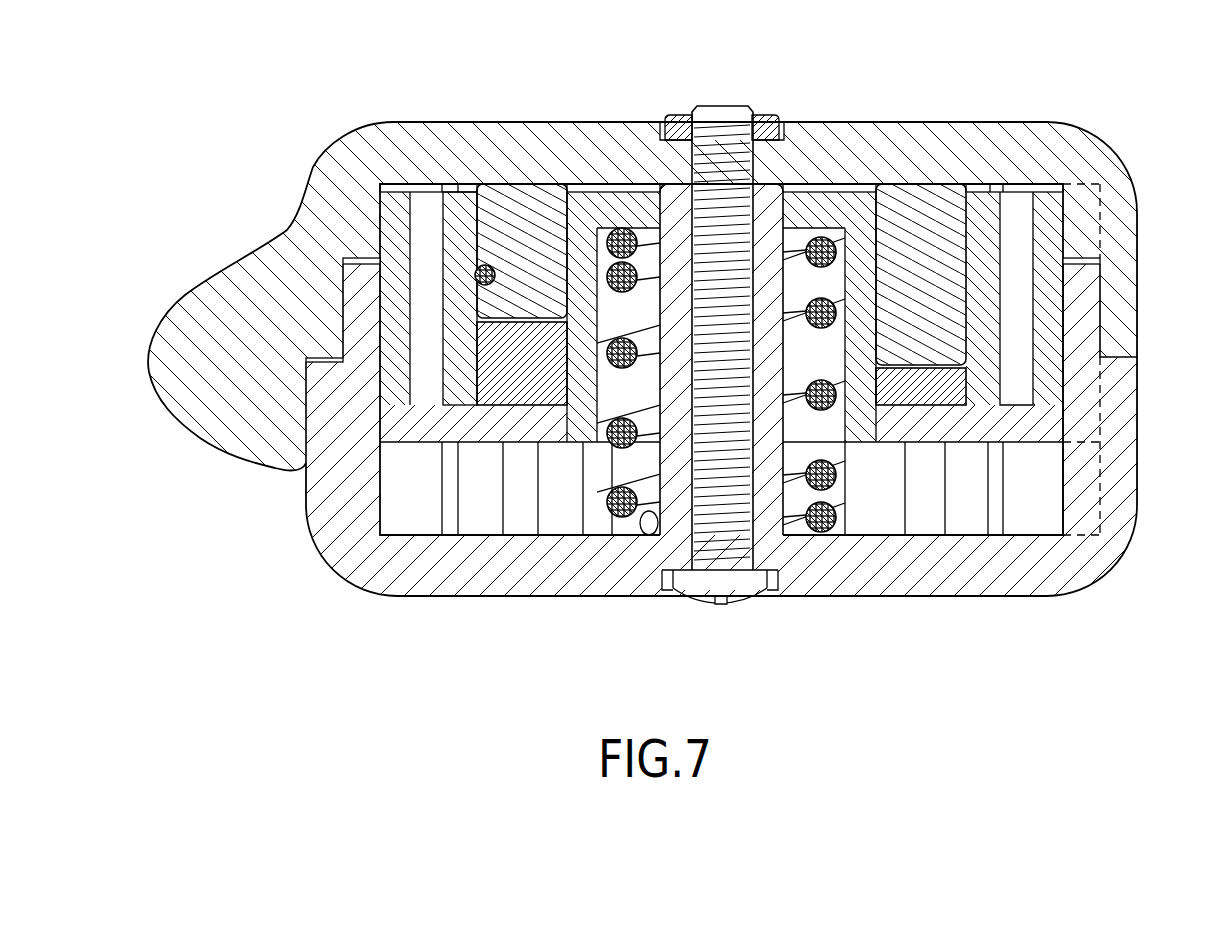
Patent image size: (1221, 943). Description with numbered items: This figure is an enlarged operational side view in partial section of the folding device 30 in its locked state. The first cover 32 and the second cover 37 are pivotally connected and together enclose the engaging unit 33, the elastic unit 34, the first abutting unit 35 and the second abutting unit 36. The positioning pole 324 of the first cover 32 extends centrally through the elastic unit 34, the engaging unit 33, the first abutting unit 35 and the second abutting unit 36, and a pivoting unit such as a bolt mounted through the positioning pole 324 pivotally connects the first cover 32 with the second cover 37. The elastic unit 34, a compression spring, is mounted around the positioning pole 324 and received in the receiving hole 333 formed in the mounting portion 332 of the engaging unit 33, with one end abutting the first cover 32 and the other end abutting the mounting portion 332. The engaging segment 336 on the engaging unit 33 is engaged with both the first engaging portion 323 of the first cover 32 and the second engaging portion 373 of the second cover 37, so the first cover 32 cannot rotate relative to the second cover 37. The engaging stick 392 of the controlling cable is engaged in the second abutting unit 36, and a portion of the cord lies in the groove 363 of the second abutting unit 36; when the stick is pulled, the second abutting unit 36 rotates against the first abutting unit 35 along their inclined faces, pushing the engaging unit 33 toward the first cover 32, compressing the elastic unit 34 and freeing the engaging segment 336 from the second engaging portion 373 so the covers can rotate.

The folding device 30 is at (680, 363).
The first cover 32 is at (997, 604).
The engaging unit 33 is at (970, 451).
The elastic unit 34 is at (836, 480).
The first abutting unit 35 is at (535, 410).
The second abutting unit 36 is at (497, 174).
The second cover 37 is at (968, 121).
The first engaging portion 323 is at (1090, 473).
The positioning pole 324 is at (673, 462).
The mounting portion 332 is at (583, 258).
The receiving hole 333 is at (845, 424).
The engaging segment 336 is at (1083, 387).
The groove 363 is at (473, 282).
The second engaging portion 373 is at (1095, 182).
The engaging stick 392 is at (477, 266).